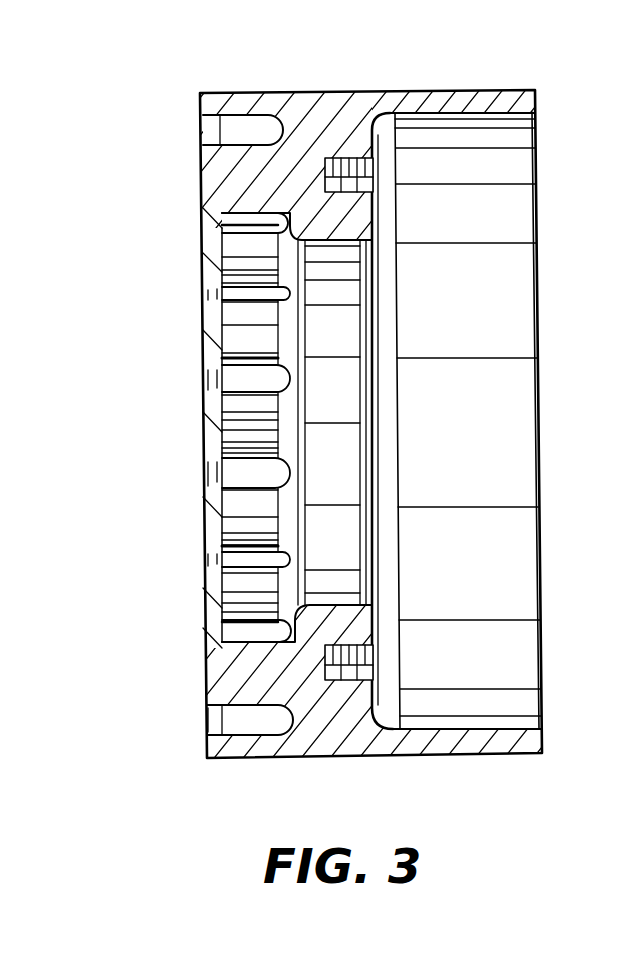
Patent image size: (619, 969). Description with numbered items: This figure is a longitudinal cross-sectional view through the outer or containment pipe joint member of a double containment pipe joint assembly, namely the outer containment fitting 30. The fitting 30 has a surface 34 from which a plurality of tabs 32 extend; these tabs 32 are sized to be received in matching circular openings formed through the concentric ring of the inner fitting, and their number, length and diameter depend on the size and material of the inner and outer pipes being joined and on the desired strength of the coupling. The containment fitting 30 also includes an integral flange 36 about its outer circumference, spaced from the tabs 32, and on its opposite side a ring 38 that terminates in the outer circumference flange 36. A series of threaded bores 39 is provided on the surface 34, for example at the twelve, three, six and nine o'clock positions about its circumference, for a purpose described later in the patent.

The outer containment fitting 30 is at (340, 77).
The tab 32 is at (222, 182).
The surface 34 is at (376, 215).
The integral flange 36 is at (233, 102).
The ring 38 is at (477, 128).
The threaded bores 39 is at (393, 183).